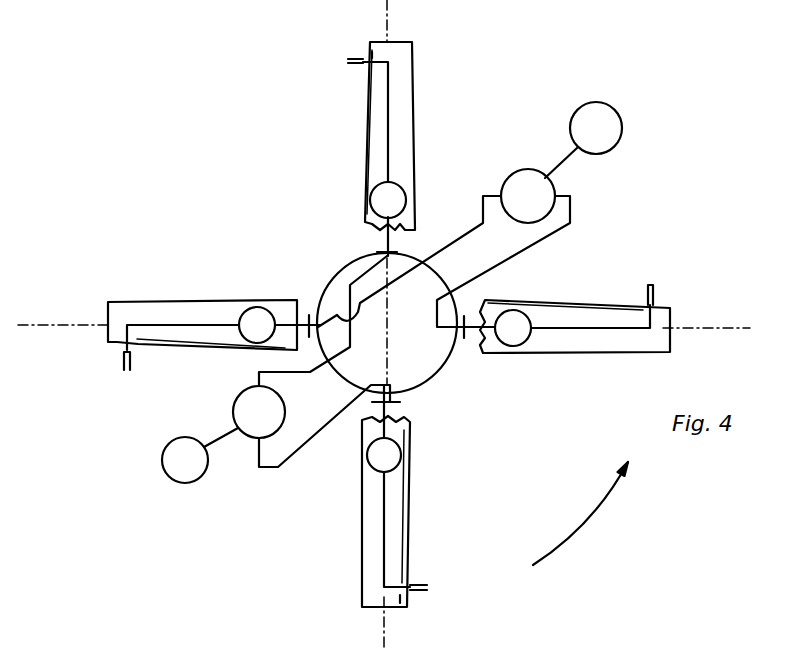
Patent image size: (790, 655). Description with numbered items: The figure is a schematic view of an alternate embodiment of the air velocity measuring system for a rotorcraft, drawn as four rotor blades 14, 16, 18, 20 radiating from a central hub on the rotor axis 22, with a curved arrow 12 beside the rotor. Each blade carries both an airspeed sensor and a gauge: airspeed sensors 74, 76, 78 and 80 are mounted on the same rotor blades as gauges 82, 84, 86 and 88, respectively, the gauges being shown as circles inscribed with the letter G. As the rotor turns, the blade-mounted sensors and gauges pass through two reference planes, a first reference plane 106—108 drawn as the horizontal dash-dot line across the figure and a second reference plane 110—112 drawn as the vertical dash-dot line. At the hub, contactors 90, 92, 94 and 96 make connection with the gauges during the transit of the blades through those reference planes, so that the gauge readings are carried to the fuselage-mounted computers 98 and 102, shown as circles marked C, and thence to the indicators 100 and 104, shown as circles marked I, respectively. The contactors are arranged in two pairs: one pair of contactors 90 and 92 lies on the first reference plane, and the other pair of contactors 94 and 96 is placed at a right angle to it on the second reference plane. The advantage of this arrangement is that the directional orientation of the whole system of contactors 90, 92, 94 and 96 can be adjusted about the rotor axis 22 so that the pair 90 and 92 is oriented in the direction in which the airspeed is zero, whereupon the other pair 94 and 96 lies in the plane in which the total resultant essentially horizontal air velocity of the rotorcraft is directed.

The direction of rotation arrow 12 is at (599, 505).
The rotor arm 14 is at (583, 302).
The rotor arm 16 is at (200, 352).
The rotor arm 18 is at (410, 515).
The rotor arm 20 is at (366, 128).
The rotor axis 22 is at (387, 328).
The airspeed sensor 74 is at (643, 297).
The airspeed sensor 76 is at (122, 360).
The airspeed sensor 78 is at (427, 585).
The airspeed sensor 80 is at (350, 66).
The gauge 82 is at (525, 347).
The gauge 84 is at (255, 306).
The gauge 86 is at (402, 447).
The gauge 88 is at (408, 195).
The contactor 90 is at (457, 336).
The contactor 92 is at (317, 312).
The contactor 94 is at (402, 402).
The contactor 96 is at (377, 252).
The computer 98 is at (521, 170).
The indicator 100 is at (622, 128).
The computer 102 is at (286, 407).
The indicator 104 is at (162, 460).
The reference plane 106 is at (713, 327).
The reference plane 108 is at (40, 322).
The reference plane 110 is at (384, 625).
The reference plane 112 is at (391, 20).